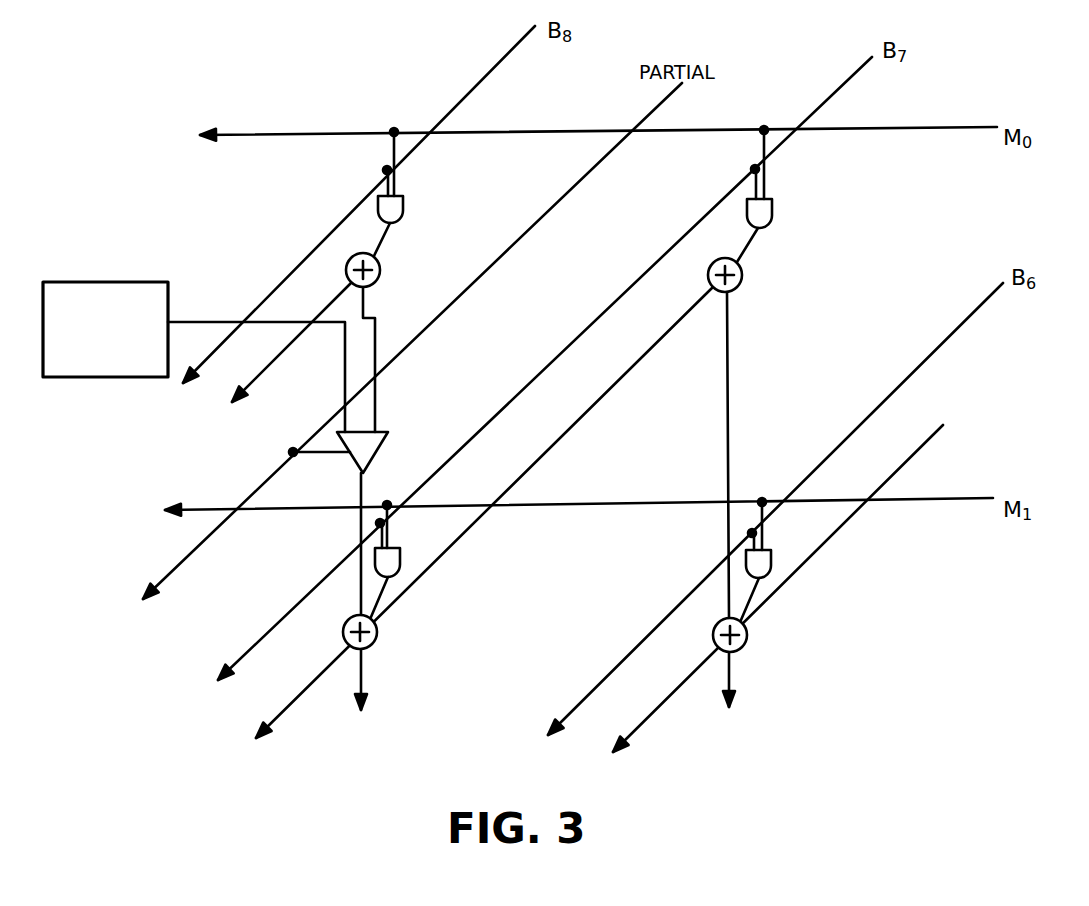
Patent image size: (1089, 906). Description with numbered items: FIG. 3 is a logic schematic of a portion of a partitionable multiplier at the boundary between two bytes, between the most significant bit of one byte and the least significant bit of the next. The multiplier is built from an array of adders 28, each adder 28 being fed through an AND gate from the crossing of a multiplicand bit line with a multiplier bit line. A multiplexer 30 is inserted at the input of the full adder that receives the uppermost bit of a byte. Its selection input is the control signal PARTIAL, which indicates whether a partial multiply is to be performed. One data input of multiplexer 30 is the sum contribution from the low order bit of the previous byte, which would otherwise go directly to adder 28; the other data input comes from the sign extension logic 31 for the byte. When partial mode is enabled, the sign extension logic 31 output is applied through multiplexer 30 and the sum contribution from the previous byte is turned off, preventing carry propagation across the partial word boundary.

The adders 28 is at (379, 276).
The multiplexer 30 is at (387, 444).
The sign extension logic 31 is at (97, 282).